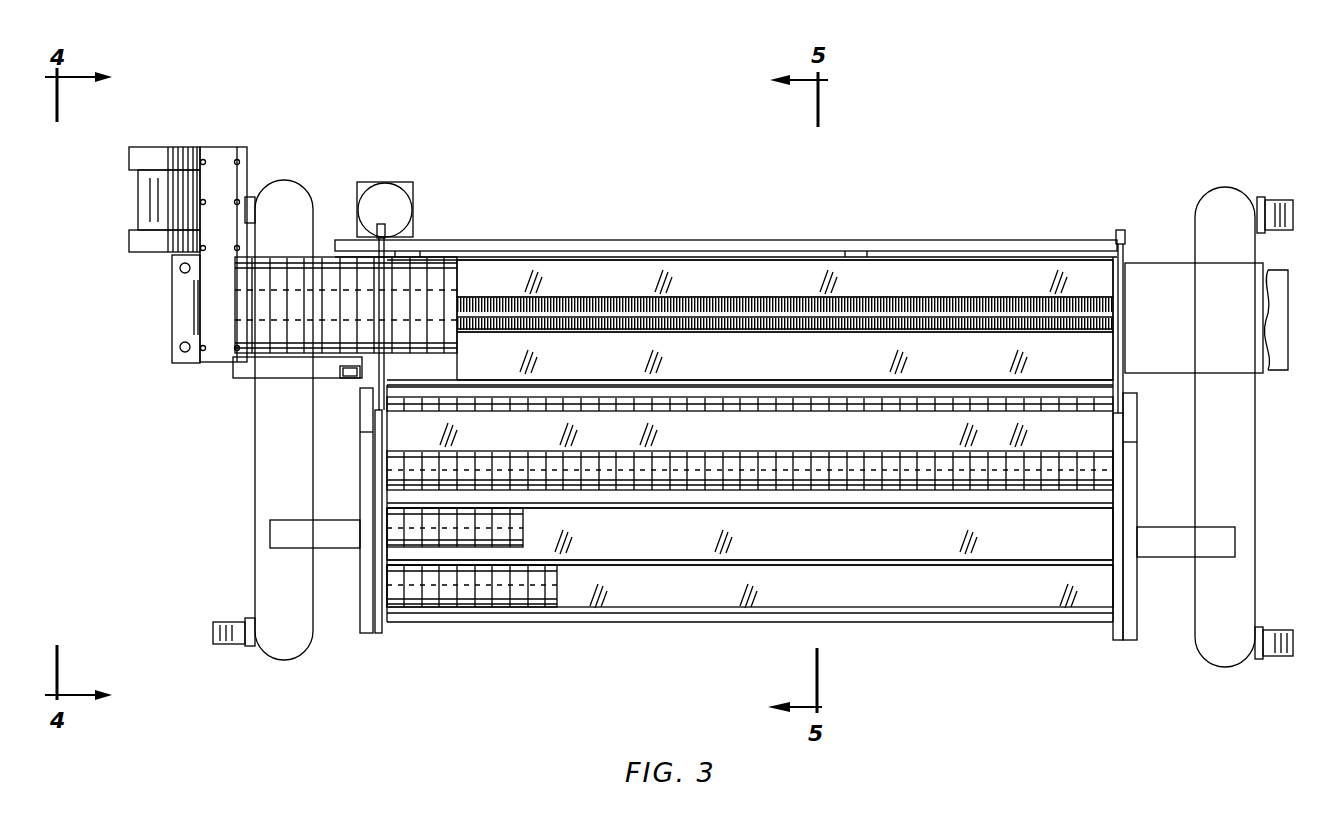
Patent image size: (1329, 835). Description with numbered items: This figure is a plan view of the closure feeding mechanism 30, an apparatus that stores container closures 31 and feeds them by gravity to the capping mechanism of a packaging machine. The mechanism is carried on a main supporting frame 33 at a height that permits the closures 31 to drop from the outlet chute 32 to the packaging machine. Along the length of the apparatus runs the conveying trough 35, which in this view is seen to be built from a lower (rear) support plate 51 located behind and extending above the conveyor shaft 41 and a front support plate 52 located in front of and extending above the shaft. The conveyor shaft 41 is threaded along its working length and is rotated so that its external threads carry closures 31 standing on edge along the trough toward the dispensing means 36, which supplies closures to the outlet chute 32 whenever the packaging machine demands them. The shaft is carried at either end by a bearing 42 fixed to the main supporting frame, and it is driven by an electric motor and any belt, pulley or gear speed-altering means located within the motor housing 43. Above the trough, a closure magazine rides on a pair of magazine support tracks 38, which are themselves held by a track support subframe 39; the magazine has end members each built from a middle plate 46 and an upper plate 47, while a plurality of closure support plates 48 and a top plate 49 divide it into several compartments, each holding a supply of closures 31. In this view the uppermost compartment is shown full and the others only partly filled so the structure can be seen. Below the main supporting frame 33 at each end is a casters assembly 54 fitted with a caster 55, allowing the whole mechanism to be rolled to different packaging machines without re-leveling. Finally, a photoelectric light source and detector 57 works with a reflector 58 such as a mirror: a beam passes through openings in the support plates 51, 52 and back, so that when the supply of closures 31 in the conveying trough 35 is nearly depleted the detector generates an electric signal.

The closure feeding mechanism 30 is at (932, 190).
The container closures 31 is at (458, 345).
The outlet chute 32 is at (149, 147).
The main supporting frame 33 is at (325, 520).
The conveying trough 35 is at (722, 268).
The dispensing means 36 is at (233, 153).
The magazine support tracks 38 is at (390, 233).
The track support subframe 39 is at (857, 241).
The conveyor shaft 41 is at (912, 303).
The bearing 42 is at (175, 300).
The motor housing 43 is at (1202, 326).
The middle plate 46 is at (365, 634).
The upper plate 47 is at (379, 634).
The closure support plates 48 is at (672, 546).
The top plate 49 is at (765, 443).
The lower support plate 51 is at (705, 291).
The front support plate 52 is at (799, 360).
The casters assembly 54 is at (258, 465).
The caster 55 is at (1278, 200).
The photoelectric light source and detector 57 is at (385, 192).
The reflector 58 is at (352, 381).